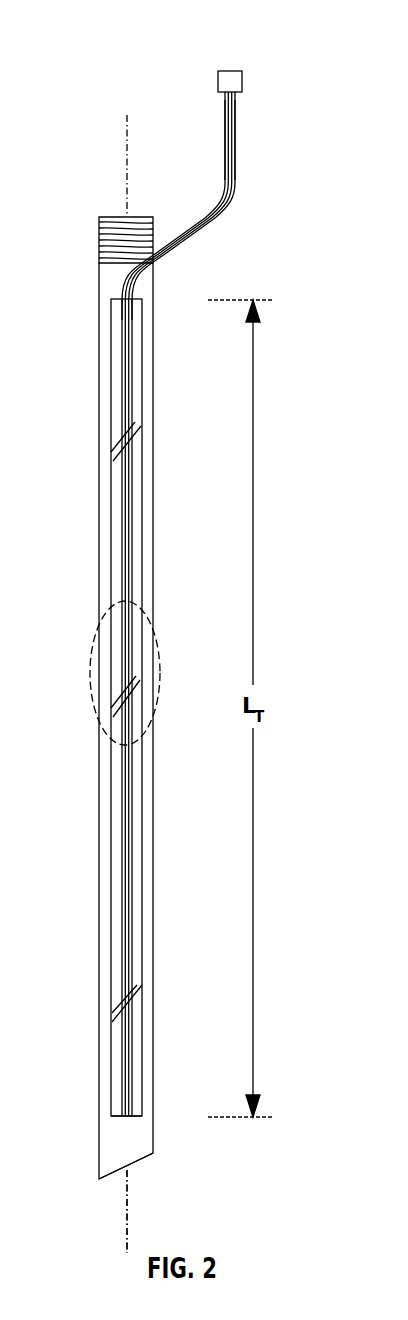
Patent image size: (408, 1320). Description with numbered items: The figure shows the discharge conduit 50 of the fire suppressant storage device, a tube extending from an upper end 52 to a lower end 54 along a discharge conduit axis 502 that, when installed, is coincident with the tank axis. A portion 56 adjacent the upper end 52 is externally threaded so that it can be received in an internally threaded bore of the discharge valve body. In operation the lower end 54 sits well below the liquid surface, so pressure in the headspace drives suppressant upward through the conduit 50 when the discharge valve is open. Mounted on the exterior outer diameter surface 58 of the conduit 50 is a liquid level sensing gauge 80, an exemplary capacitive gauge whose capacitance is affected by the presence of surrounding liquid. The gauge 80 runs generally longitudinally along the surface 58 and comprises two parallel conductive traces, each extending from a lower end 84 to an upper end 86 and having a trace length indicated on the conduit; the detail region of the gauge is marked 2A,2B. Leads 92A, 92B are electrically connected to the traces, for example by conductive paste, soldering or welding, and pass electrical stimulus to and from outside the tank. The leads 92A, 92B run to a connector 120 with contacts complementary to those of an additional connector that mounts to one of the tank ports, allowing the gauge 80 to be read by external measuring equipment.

The discharge conduit 50 is at (78, 360).
The upper end 52 is at (112, 216).
The lower end 54 is at (130, 1168).
The portion 56 is at (170, 248).
The outer diameter surface 58 is at (145, 458).
The liquid level sensing gauge 80 is at (142, 662).
The lower end 84 is at (115, 1117).
The upper end 86 is at (128, 292).
The lead 92A is at (224, 147).
The lead 92B is at (237, 150).
The connector 120 is at (230, 72).
The discharge conduit axis 502 is at (126, 1222).
The detail view indicator 2A,2B is at (158, 646).